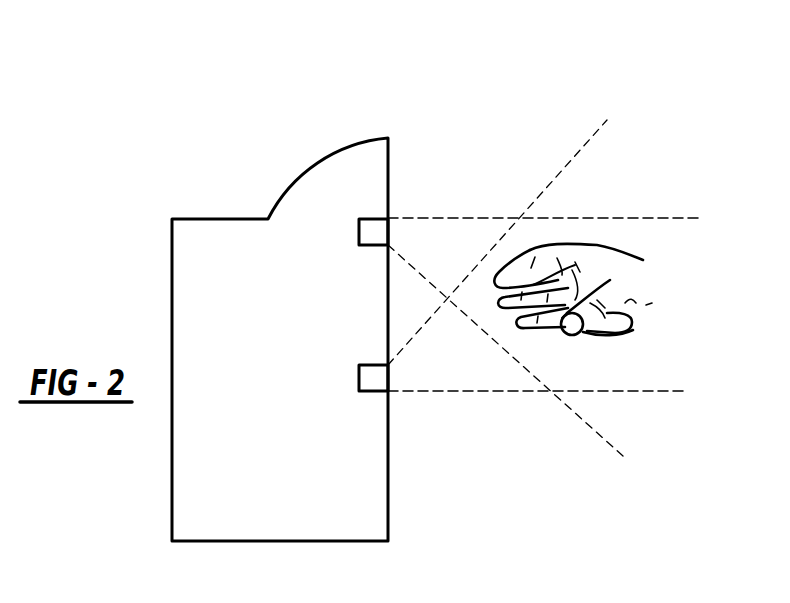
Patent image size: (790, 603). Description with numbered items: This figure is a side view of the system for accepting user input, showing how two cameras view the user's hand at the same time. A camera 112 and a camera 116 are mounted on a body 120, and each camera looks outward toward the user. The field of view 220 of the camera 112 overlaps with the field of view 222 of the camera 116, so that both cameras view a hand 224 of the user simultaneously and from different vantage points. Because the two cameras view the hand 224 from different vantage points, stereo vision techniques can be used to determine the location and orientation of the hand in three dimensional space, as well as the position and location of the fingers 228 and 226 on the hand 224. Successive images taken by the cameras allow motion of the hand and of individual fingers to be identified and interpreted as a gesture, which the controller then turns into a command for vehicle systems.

The camera 112 is at (373, 217).
The camera 116 is at (359, 378).
The vehicle body panel 120 is at (303, 222).
The field of view 220 is at (428, 218).
The field of view 222 is at (453, 392).
The hand 224 is at (643, 260).
The finger 226 is at (588, 333).
The finger 228 is at (530, 250).